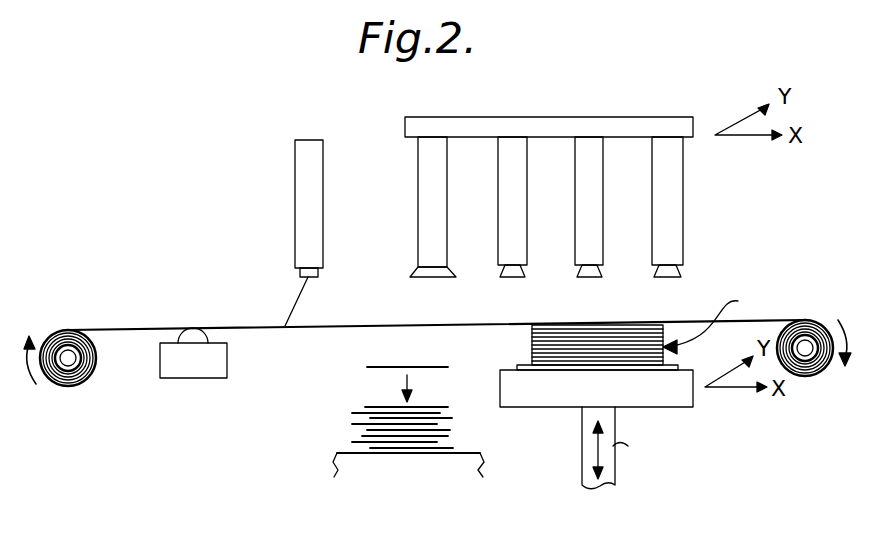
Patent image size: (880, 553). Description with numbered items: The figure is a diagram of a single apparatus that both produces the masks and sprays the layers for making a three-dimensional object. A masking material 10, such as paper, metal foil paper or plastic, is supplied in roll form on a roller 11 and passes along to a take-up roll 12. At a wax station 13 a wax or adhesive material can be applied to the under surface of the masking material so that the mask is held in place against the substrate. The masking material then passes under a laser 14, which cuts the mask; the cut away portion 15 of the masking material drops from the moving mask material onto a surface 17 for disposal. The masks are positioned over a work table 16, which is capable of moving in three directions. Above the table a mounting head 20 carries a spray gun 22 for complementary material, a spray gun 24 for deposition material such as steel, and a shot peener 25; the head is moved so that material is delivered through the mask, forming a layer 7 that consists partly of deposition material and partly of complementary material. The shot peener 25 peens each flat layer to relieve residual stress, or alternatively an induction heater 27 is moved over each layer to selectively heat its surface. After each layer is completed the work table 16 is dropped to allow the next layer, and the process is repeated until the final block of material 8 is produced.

The layer 7 is at (532, 345).
The block of material 8 is at (709, 322).
The masking material 10 is at (160, 328).
The roller 11 is at (60, 384).
The take-up roll 12 is at (812, 385).
The wax station 13 is at (193, 378).
The laser 14 is at (295, 225).
The cut away portion 15 is at (388, 367).
The work table 16 is at (567, 380).
The surface 17 is at (338, 453).
The head 20 is at (410, 126).
The spray gun 22 is at (600, 230).
The spray gun 24 is at (683, 200).
The shot peener 25 is at (525, 250).
The induction heater 27 is at (418, 212).